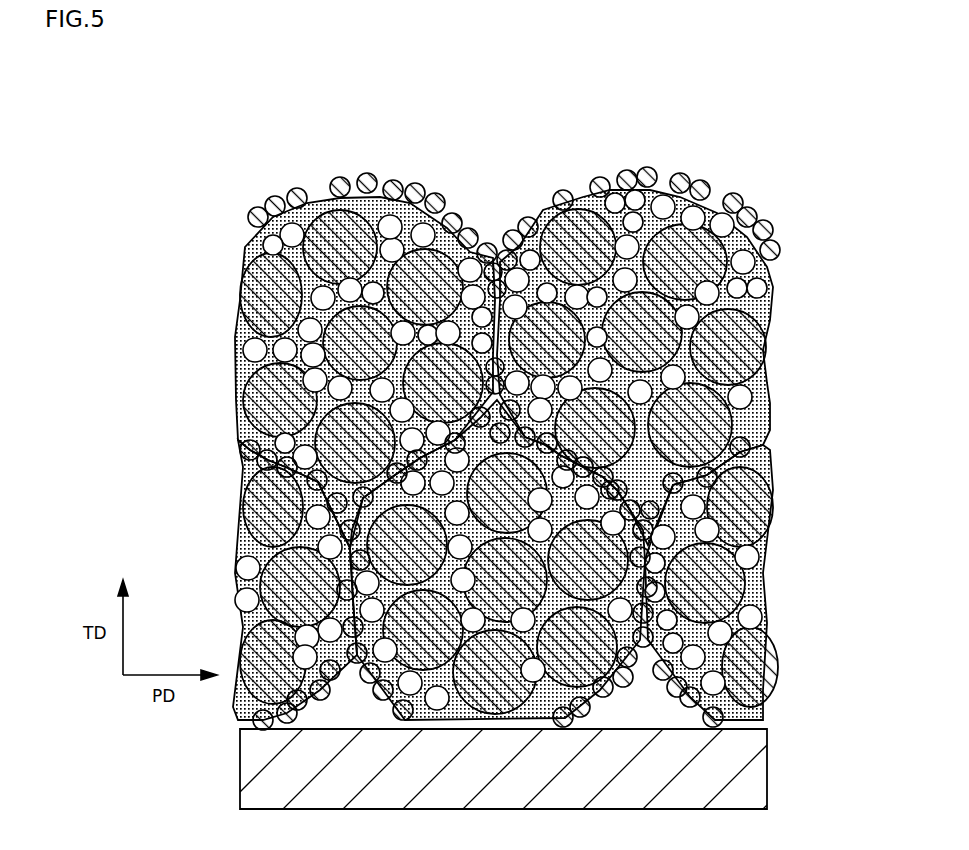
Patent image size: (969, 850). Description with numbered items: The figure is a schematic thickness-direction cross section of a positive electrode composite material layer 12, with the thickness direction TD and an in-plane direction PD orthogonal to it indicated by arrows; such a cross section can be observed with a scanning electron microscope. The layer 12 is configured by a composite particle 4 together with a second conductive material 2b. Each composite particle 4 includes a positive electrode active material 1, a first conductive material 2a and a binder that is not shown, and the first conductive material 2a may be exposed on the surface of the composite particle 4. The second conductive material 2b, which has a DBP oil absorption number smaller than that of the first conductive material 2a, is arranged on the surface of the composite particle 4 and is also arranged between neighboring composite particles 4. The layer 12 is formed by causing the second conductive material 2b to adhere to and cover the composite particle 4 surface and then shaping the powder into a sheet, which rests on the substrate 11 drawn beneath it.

The positive electrode active material 1 is at (335, 223).
The first conductive material 2a is at (388, 225).
The second conductive material 2b is at (437, 197).
The composite particle 4 is at (365, 310).
The substrate 11 is at (757, 784).
The positive electrode composite material layer 12 is at (541, 401).